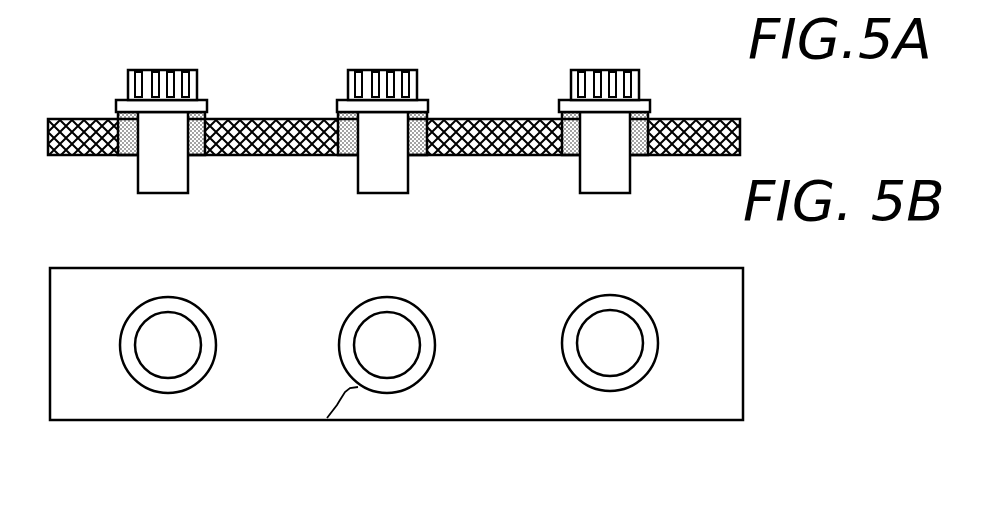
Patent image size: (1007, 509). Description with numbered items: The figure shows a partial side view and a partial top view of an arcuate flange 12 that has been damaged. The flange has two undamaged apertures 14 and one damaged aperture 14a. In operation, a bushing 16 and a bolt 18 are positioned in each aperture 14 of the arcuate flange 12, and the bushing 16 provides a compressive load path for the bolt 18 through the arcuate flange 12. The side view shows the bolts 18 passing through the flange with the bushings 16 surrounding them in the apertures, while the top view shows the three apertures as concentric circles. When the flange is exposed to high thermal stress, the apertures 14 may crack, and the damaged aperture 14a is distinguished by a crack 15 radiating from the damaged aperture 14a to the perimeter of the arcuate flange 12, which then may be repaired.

In FIG. 5A, the arcuate flange 12 is at (740, 127).
In FIG. 5B, the arcuate flange 12 is at (735, 352).
In FIG. 5B, the aperture 14 is at (165, 365).
In FIG. 5B, the damaged aperture 14a is at (387, 322).
In FIG. 5B, the crack 15 is at (337, 405).
In FIG. 5A, the bushing 16 is at (247, 120).
In FIG. 5B, the bushing 16 is at (410, 308).
In FIG. 5A, the bolt 18 is at (197, 90).
In FIG. 5B, the bolt 18 is at (602, 370).